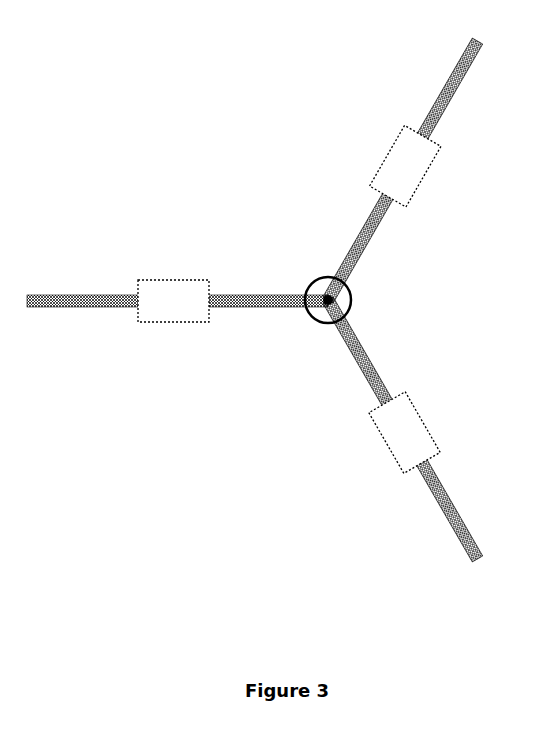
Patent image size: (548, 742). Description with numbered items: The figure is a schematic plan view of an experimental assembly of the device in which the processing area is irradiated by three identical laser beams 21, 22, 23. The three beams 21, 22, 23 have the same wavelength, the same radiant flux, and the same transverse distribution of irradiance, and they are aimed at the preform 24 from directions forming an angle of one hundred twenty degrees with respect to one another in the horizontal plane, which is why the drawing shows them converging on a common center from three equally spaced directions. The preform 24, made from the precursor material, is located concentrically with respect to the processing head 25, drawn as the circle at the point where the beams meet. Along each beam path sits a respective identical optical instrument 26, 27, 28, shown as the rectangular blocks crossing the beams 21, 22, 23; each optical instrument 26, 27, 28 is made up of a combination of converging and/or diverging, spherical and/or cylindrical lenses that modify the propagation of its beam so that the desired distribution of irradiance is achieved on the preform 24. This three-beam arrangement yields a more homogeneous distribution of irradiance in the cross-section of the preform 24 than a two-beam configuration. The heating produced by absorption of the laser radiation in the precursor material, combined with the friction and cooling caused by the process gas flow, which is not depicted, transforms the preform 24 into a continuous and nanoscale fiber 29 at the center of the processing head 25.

The laser beam 21 is at (43, 291).
The laser beam 22 is at (456, 58).
The laser beam 23 is at (480, 536).
The preform 24 is at (328, 312).
The processing head 25 is at (353, 291).
The optical instrument 26 is at (190, 278).
The optical instrument 27 is at (387, 154).
The optical instrument 28 is at (384, 446).
The continuous and nanoscale fiber 29 is at (326, 292).